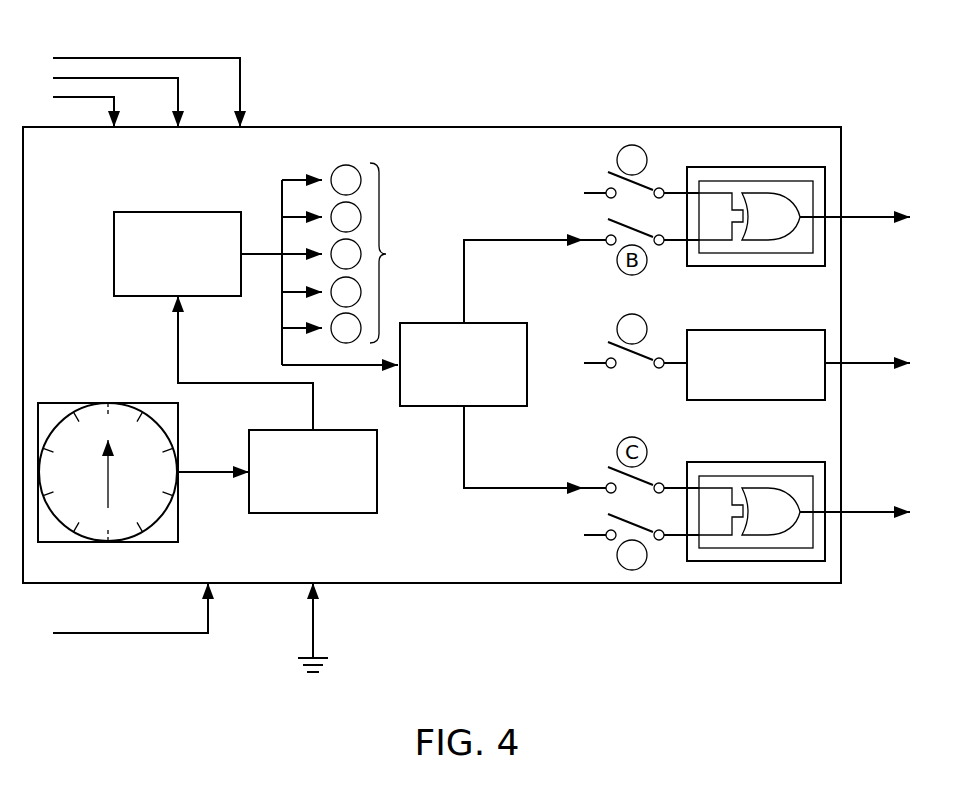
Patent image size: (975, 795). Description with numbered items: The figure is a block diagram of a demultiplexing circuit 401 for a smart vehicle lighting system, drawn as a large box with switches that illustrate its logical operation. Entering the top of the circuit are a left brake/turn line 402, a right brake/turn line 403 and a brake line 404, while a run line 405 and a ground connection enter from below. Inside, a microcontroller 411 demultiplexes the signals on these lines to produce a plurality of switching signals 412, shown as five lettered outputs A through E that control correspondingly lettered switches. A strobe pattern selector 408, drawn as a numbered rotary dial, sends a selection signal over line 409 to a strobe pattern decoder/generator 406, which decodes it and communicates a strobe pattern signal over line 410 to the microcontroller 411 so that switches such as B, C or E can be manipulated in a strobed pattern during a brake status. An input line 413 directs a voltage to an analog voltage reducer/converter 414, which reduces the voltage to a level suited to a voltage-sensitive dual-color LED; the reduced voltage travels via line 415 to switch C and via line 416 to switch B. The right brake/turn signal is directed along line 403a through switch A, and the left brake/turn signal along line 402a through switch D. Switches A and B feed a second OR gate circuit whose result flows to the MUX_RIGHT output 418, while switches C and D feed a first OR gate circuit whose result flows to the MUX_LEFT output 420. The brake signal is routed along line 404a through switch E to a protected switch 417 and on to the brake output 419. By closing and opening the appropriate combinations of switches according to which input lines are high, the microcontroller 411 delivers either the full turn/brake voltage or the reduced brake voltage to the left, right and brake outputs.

The demultiplexing circuit 401 is at (783, 80).
The left brake/turn line 402 is at (192, 56).
The right brake/turn line 403 is at (138, 76).
The brake line 404 is at (83, 95).
The run line 405 is at (135, 636).
The strobe pattern decoder/generator 406 is at (313, 471).
The strobe pattern selector 408 is at (68, 401).
The selection signal line 409 is at (210, 474).
The strobe pattern signal line 410 is at (172, 340).
The microcontroller 411 is at (177, 254).
The plurality of switching signals 412 is at (341, 264).
The input line 413 is at (343, 368).
The analog voltage reducer/converter 414 is at (463, 364).
The reduced voltage line to switch C 415 is at (515, 491).
The reduced voltage line to switch B 416 is at (497, 238).
The protected switch 417 is at (756, 365).
The MUX_RIGHT output 418 is at (880, 214).
The brake output 419 is at (880, 361).
The MUX_LEFT output 420 is at (880, 509).
The left turn/brake signal line to switch D 402a is at (590, 537).
The right turn/brake signal line to switch A 403a is at (590, 190).
The brake signal line to switch E 404a is at (591, 366).